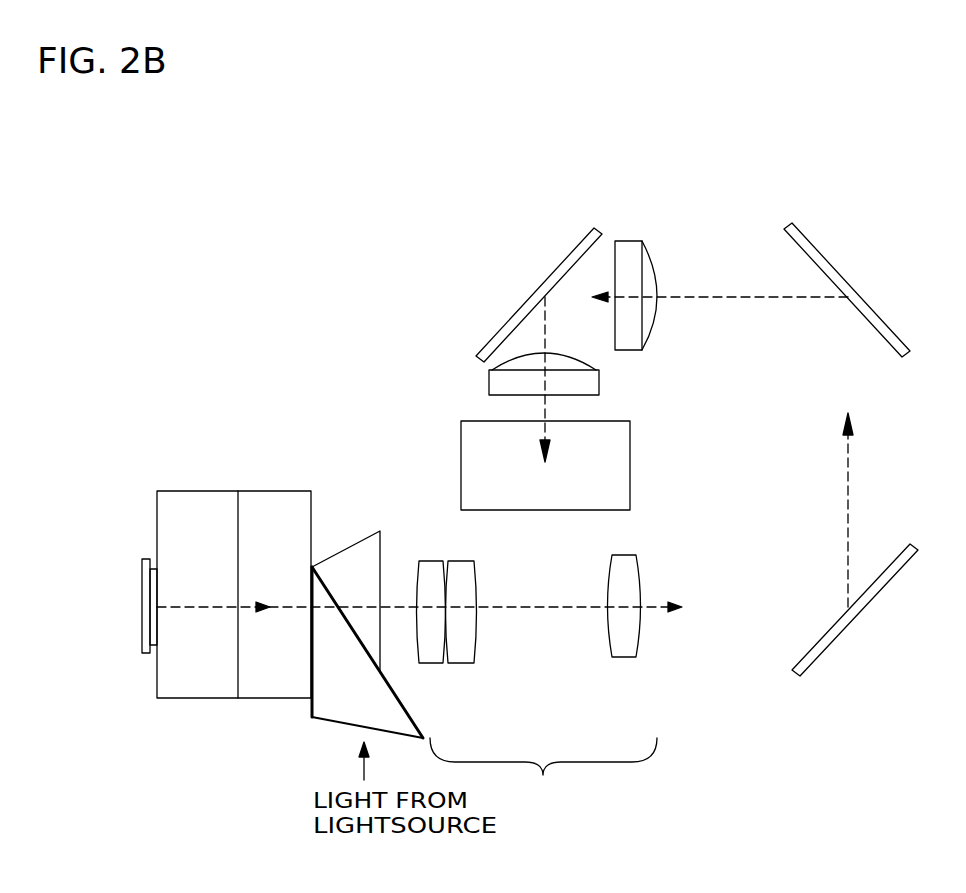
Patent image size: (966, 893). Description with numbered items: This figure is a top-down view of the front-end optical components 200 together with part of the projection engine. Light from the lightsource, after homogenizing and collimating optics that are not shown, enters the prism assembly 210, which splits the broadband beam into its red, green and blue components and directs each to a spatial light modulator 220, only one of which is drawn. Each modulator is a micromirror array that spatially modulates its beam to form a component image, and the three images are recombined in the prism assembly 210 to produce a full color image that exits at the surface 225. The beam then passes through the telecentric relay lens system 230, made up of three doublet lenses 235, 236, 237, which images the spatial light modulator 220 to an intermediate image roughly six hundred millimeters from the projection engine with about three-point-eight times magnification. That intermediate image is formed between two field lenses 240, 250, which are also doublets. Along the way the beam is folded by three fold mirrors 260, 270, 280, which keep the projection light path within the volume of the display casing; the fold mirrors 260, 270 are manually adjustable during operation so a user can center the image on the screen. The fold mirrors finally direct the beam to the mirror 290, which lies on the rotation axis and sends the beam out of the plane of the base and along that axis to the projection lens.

The front-end optical components 200 is at (840, 124).
The prism assembly 210 is at (280, 682).
The spatial light modulator 220 is at (142, 637).
The surface 225 is at (382, 595).
The telecentric relay lens system 230 is at (543, 774).
The doublet lens 235 is at (430, 663).
The doublet lens 236 is at (465, 663).
The doublet lens 237 is at (623, 645).
The field lens 240 is at (630, 252).
The field lens 250 is at (488, 377).
The fold mirror 260 is at (832, 637).
The fold mirror 270 is at (862, 303).
The fold mirror 280 is at (560, 265).
The mirror 290 is at (592, 458).